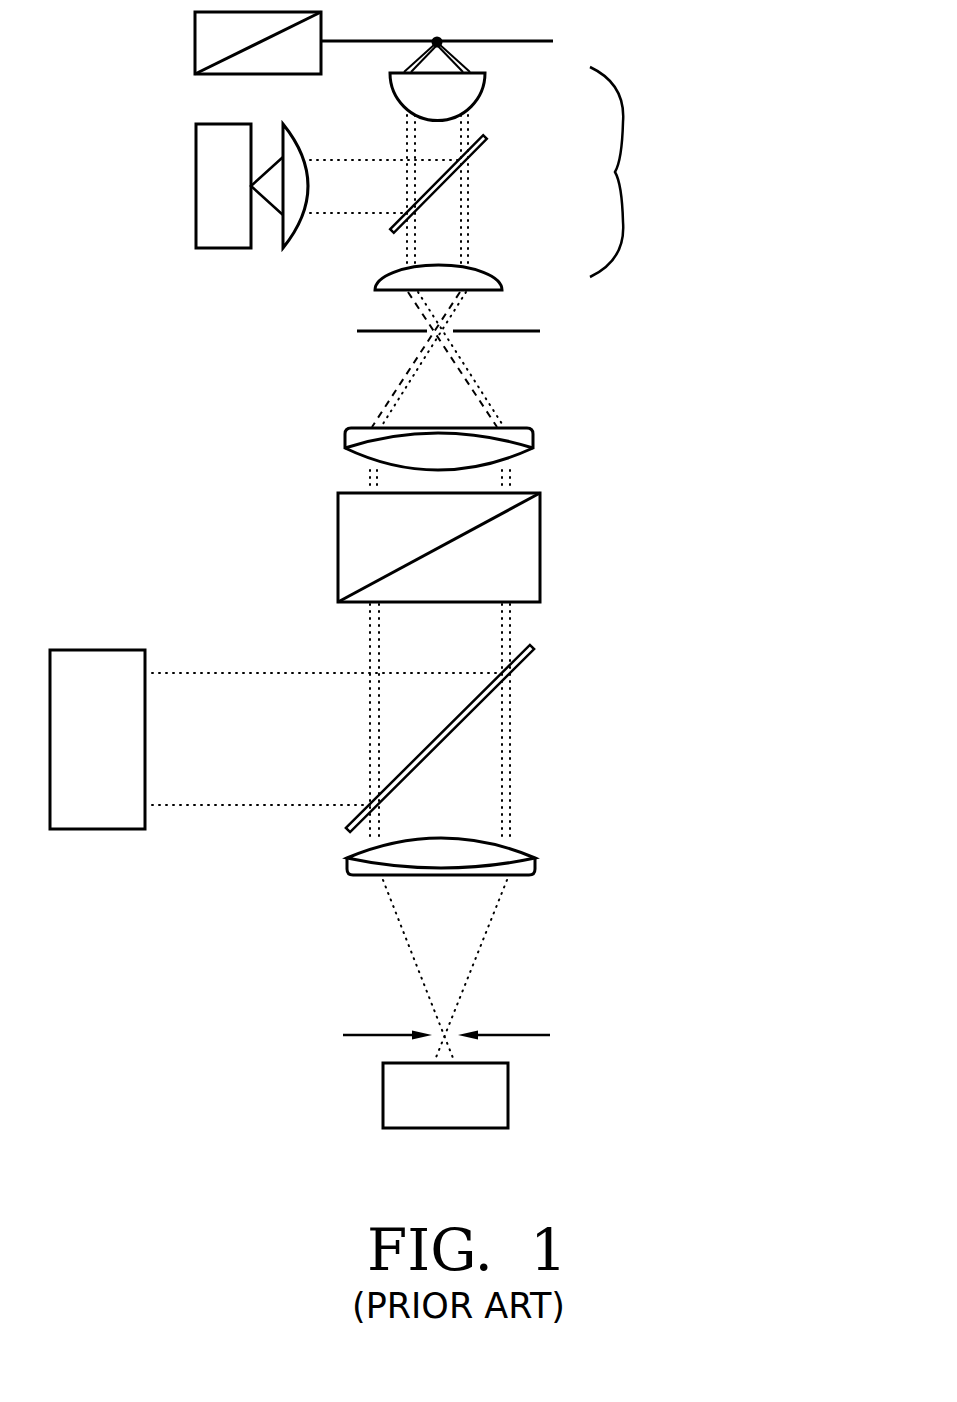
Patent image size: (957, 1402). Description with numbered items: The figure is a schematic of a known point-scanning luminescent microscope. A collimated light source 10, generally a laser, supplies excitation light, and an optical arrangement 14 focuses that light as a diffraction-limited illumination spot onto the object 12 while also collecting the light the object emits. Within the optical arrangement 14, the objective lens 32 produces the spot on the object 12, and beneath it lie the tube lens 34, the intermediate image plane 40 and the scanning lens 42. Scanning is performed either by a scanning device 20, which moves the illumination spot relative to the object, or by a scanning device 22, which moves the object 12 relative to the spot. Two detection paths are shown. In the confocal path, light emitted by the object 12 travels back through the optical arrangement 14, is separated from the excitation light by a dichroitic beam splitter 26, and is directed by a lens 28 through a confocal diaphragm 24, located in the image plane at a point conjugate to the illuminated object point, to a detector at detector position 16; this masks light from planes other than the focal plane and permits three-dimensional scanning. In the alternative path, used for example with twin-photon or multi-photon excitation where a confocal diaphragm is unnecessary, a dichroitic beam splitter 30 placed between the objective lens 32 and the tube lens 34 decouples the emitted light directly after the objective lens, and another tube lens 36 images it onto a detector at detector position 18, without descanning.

The collimated light source 10 is at (90, 829).
The object 12 is at (466, 49).
The optical arrangement 14 is at (629, 172).
The detector position 16 is at (498, 1107).
The detector position 18 is at (220, 248).
The scanning device 20 is at (540, 548).
The scanning device 22 is at (193, 30).
The confocal diaphragm 24 is at (472, 1035).
The dichroitic beam splitter 26 is at (440, 743).
The lens 28 is at (513, 850).
The dichroitic beam splitter 30 is at (438, 190).
The objective lens 32 is at (462, 90).
The tube lens 34 is at (473, 280).
The tube lens 36 is at (290, 233).
The intermediate image plane 40 is at (471, 332).
The scanning lens 42 is at (512, 450).